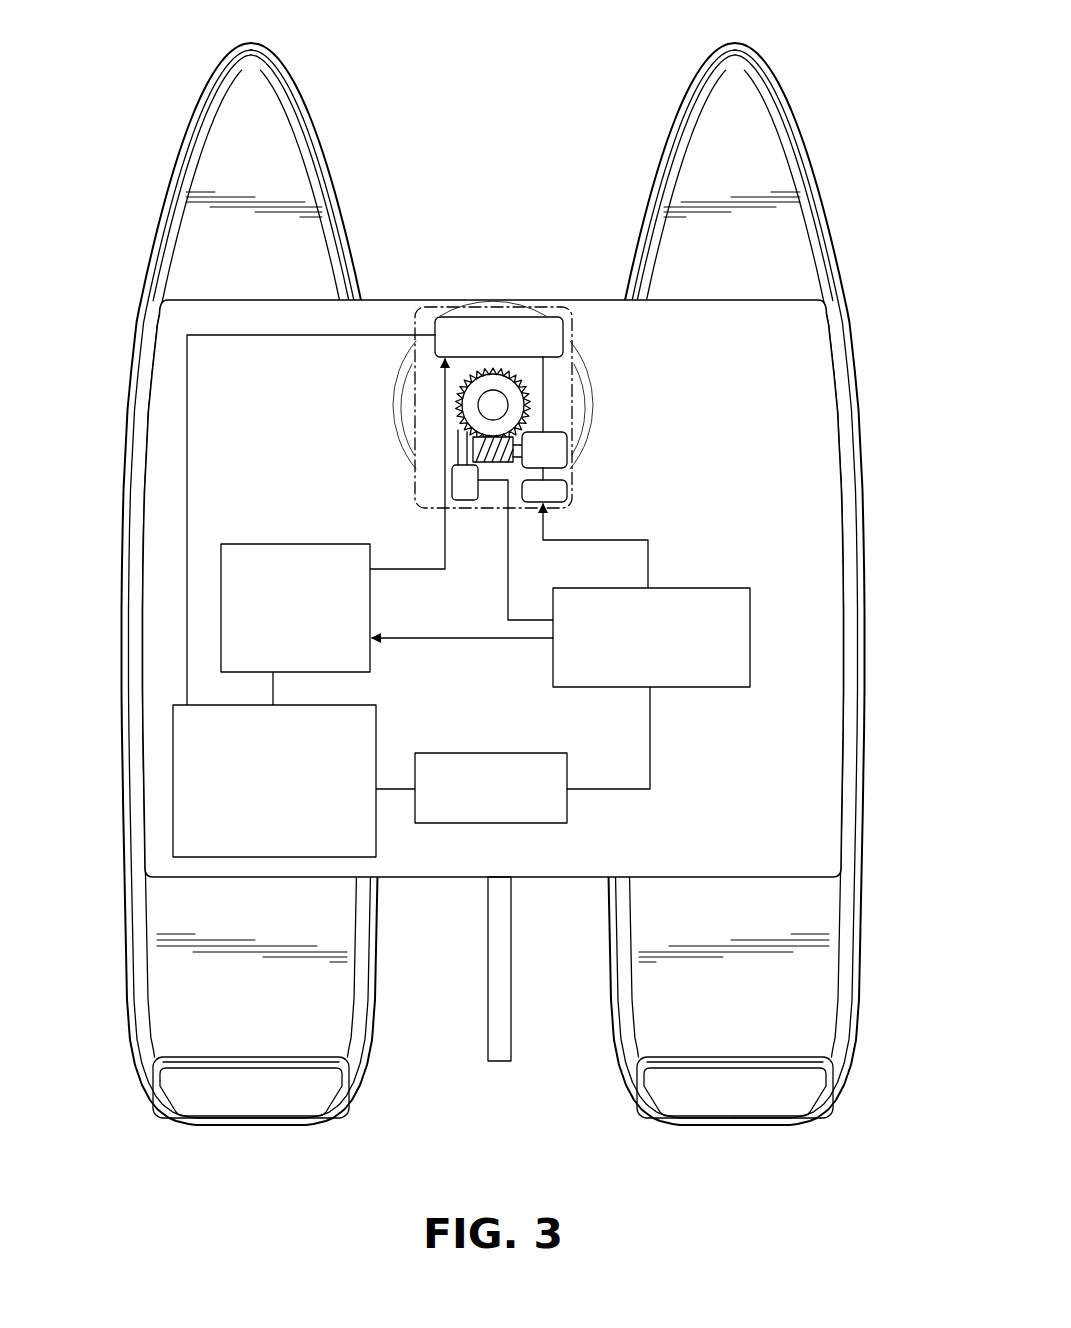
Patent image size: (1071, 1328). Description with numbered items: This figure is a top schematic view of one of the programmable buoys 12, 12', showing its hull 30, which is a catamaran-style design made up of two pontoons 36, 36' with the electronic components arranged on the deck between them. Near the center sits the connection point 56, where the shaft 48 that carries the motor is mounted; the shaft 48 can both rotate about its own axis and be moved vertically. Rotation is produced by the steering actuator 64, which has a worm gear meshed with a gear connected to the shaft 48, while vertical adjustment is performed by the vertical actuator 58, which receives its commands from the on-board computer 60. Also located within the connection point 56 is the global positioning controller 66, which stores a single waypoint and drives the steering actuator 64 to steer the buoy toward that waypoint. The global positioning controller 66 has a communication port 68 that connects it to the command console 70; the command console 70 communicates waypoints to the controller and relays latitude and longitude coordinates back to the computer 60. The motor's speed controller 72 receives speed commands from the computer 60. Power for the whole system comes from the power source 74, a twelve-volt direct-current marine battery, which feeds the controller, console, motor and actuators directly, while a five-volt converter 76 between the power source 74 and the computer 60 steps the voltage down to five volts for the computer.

The buoy 12 is at (524, 564).
The buoy 12' is at (749, 584).
The hull 30 is at (108, 93).
The pontoon 36 is at (232, 584).
The pontoon 36' is at (749, 584).
The shaft 48 is at (514, 403).
The connection point 56 is at (422, 482).
The vertical actuator 58 is at (465, 492).
The computer 60 is at (750, 633).
The steering actuator 64 is at (555, 447).
The global positioning controller 66 is at (495, 332).
The communication port 68 is at (445, 427).
The command console 70 is at (293, 544).
The speed controller 72 is at (557, 490).
The power source 74 is at (172, 785).
The 5 V converter 76 is at (492, 823).